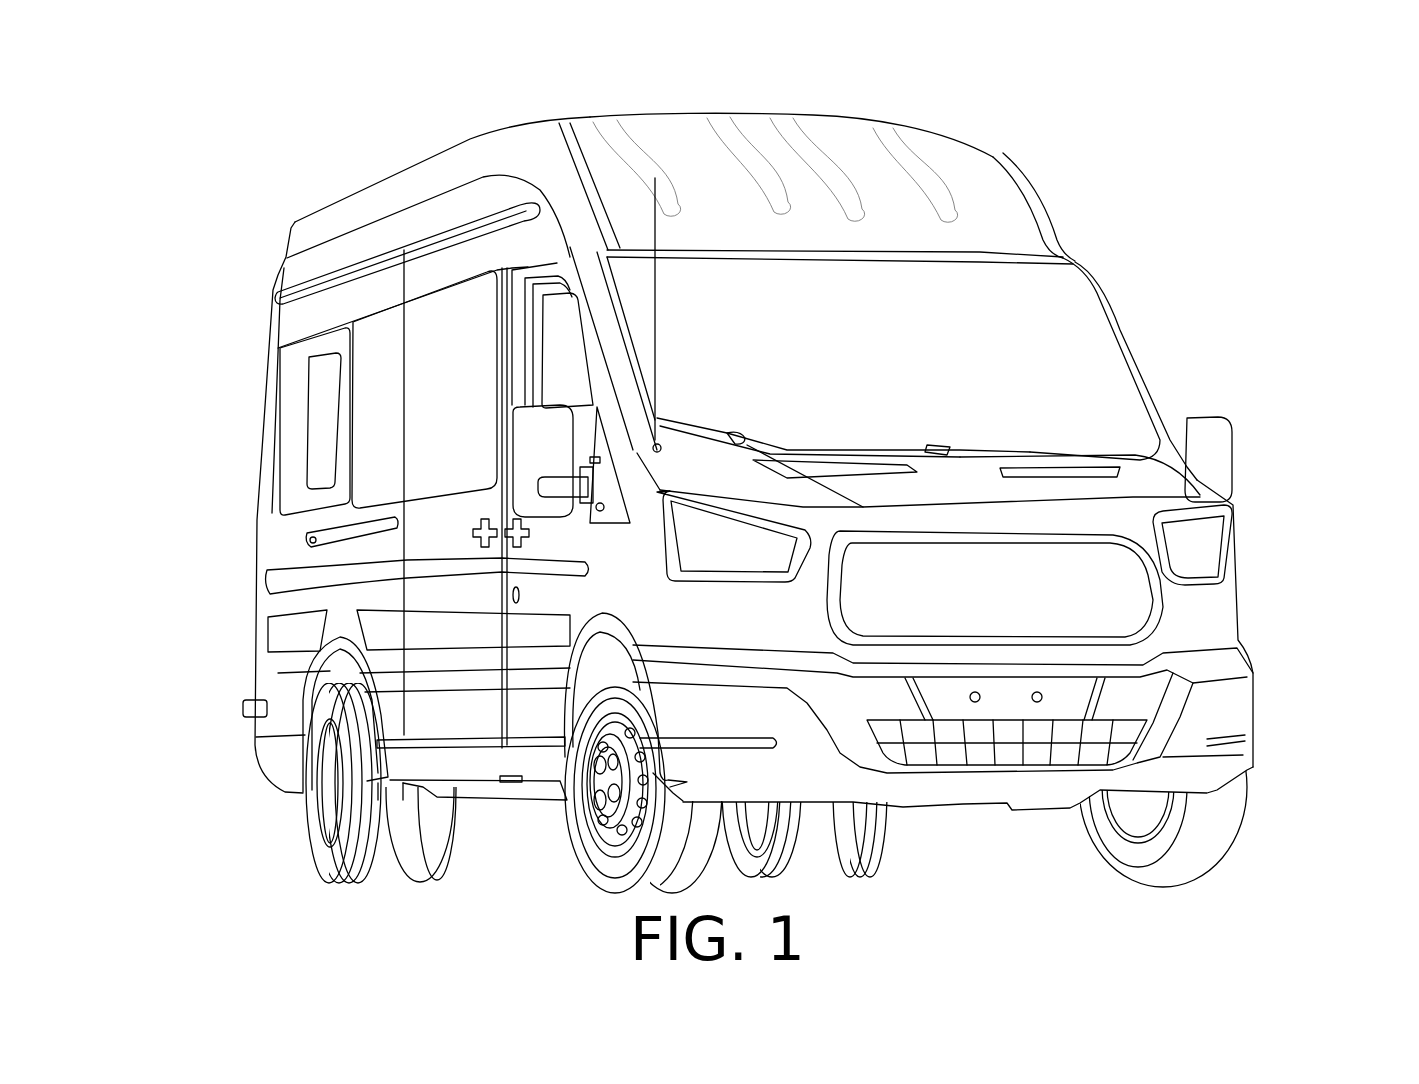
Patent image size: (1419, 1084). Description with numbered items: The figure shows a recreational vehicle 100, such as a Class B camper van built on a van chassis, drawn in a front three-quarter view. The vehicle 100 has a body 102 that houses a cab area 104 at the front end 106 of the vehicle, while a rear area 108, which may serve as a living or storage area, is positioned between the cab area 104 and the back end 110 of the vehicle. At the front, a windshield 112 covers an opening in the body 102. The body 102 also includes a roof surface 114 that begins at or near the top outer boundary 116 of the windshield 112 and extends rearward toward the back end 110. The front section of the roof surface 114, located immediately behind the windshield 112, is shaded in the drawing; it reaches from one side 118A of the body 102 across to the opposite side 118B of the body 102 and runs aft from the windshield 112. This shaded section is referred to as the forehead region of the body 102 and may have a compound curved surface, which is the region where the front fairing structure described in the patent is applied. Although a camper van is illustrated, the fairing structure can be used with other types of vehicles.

The vehicle 100 is at (215, 92).
The body 102 is at (290, 313).
The cab area 104 is at (1067, 320).
The front end 106 is at (1300, 650).
The rear area 108 is at (318, 388).
The back end 110 is at (204, 536).
The windshield 112 is at (916, 363).
The roof surface 114 is at (848, 127).
The top outer boundary 116 is at (1053, 257).
The side of the body 118A is at (580, 153).
The opposite side of the body 118B is at (997, 153).